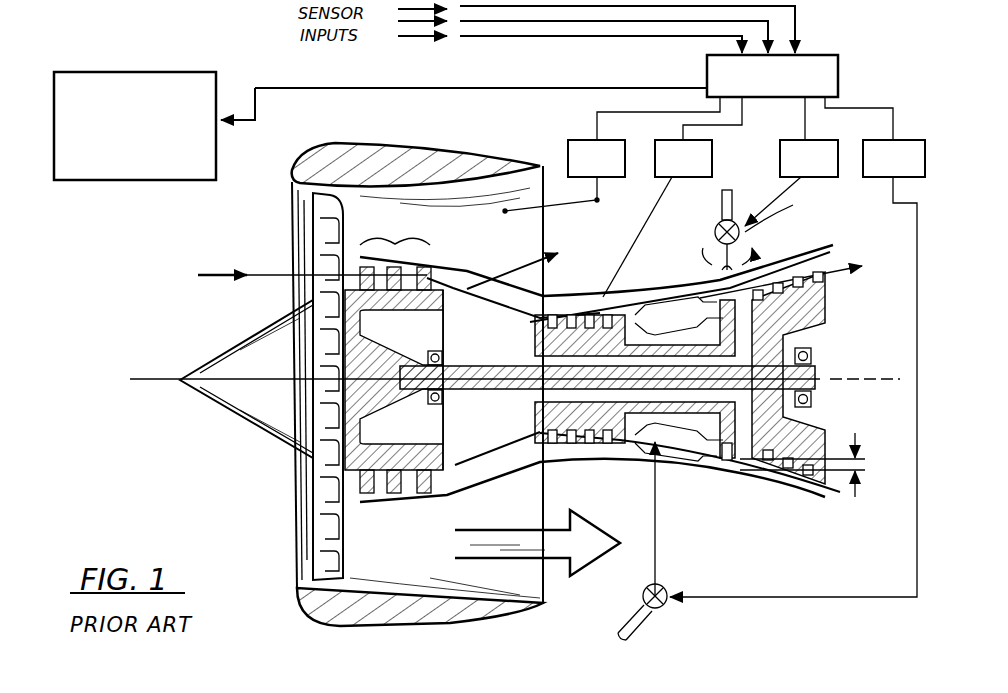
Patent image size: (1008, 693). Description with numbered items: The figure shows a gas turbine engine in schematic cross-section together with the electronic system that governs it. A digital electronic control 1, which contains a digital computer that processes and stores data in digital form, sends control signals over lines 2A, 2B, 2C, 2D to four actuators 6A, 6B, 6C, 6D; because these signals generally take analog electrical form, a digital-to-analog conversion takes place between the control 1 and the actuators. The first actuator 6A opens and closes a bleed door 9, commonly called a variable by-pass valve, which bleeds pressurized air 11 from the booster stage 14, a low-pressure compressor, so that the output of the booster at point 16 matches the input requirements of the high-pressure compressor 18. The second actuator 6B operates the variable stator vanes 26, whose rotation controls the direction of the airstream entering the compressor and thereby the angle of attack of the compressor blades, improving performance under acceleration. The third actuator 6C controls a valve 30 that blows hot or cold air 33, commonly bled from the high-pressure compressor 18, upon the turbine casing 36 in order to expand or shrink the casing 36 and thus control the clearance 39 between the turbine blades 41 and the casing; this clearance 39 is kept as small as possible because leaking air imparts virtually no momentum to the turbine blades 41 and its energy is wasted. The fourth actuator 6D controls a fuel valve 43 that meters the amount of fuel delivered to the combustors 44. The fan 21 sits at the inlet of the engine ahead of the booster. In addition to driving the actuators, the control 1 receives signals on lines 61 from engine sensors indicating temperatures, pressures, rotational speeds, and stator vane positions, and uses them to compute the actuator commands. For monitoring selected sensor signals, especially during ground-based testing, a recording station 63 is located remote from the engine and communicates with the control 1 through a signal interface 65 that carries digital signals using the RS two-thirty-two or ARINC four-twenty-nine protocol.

The digital electronic control 1 is at (840, 70).
The control signal line 2A is at (596, 112).
The control signal line 2B is at (683, 125).
The control signal line 2C is at (805, 125).
The control signal line 2D is at (866, 100).
The first actuator 6A is at (564, 176).
The second actuator 6B is at (657, 218).
The third actuator 6C is at (791, 183).
The fourth actuator 6D is at (797, 368).
The bleed door 9 is at (546, 300).
The pressurized air 11 is at (570, 302).
The booster stage 14 is at (395, 226).
The booster output point 16 is at (467, 292).
The high-pressure compressor 18 is at (640, 282).
The fan 21 is at (325, 548).
The variable stator vanes 26 is at (600, 300).
The valve 30 is at (165, 380).
The air 33 is at (767, 251).
The turbine casing 36 is at (822, 258).
The clearance 39 is at (855, 440).
The turbine blades 41 is at (728, 462).
The fuel valve 43 is at (670, 589).
The combustors 44 is at (679, 442).
The sensor signal lines 61 is at (464, 86).
The recording station 63 is at (148, 182).
The signal interface 65 is at (325, 90).